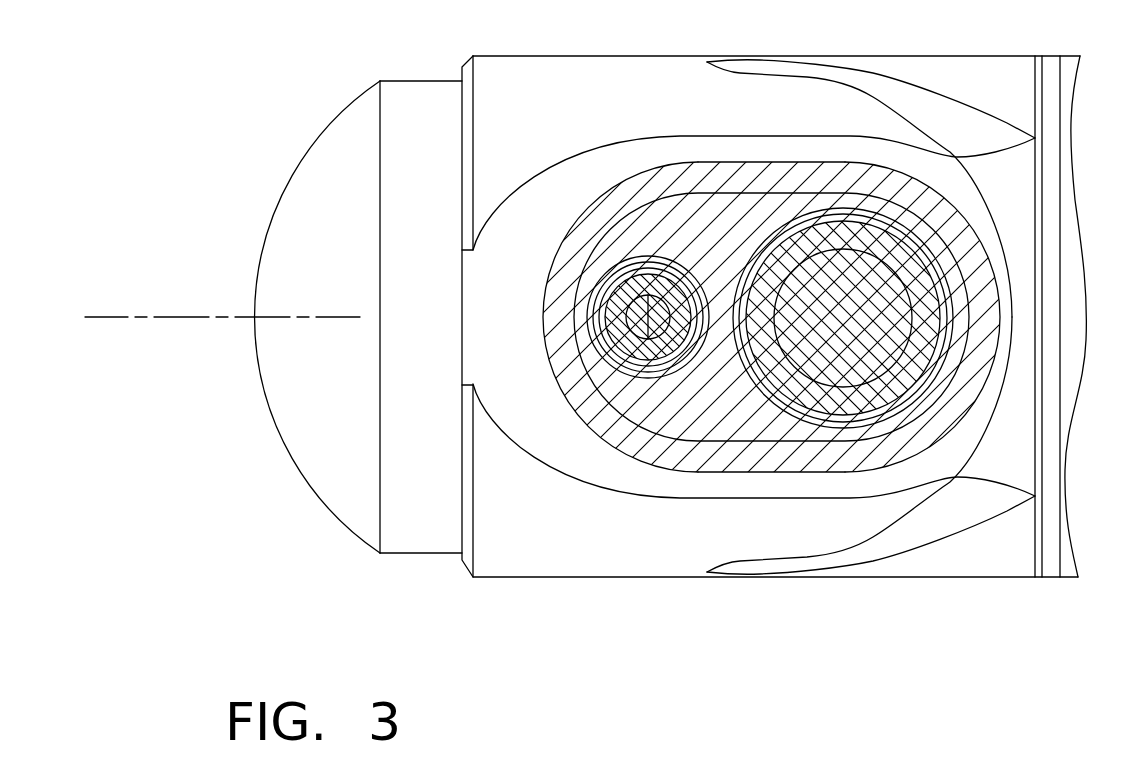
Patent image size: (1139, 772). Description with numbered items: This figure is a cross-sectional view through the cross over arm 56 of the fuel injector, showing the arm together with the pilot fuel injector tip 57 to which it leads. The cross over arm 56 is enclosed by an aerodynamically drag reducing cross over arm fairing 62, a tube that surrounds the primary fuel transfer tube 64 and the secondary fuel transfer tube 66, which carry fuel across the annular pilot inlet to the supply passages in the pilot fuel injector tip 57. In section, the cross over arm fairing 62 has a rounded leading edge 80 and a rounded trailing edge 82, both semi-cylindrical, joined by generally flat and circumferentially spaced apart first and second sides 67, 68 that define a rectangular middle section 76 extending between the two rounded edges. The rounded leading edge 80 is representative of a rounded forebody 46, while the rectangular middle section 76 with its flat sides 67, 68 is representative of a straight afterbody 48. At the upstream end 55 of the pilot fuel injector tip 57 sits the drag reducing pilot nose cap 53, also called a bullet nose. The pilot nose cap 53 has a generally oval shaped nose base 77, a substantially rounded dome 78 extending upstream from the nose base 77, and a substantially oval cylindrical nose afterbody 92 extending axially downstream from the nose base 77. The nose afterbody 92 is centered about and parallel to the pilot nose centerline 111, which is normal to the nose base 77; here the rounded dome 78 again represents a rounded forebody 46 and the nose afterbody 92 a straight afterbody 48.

The rounded forebody 46 is at (577, 411).
The straight afterbody 48 is at (767, 180).
The pilot nose cap 53 is at (378, 81).
The upstream end 55 is at (458, 562).
The cross over arm 56 is at (657, 150).
The pilot fuel injector tip 57 is at (527, 56).
The cross over arm fairing 62 is at (803, 150).
The primary fuel transfer tube 64 is at (927, 300).
The secondary fuel transfer tube 66 is at (654, 348).
The first side 67 is at (757, 160).
The second side 68 is at (767, 473).
The rectangular middle section 76 is at (840, 160).
The nose base 77 is at (378, 372).
The rounded dome 78 is at (250, 335).
The rounded leading edge 80 is at (610, 185).
The rounded trailing edge 82 is at (953, 207).
The nose afterbody 92 is at (412, 553).
The pilot nose centerline 111 is at (168, 312).